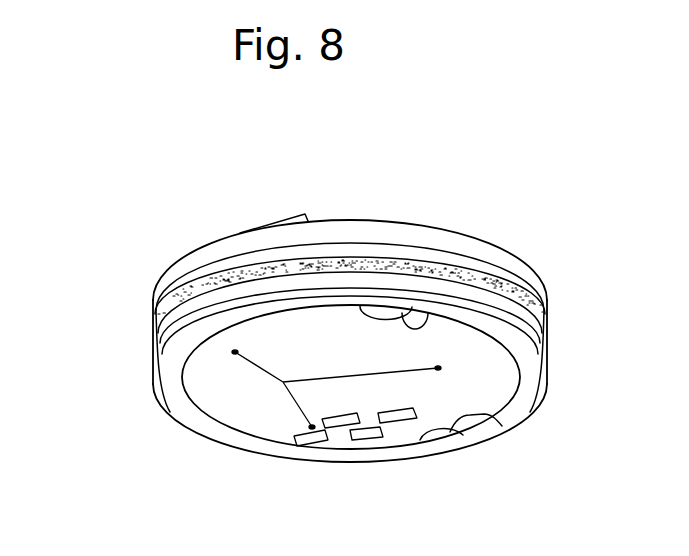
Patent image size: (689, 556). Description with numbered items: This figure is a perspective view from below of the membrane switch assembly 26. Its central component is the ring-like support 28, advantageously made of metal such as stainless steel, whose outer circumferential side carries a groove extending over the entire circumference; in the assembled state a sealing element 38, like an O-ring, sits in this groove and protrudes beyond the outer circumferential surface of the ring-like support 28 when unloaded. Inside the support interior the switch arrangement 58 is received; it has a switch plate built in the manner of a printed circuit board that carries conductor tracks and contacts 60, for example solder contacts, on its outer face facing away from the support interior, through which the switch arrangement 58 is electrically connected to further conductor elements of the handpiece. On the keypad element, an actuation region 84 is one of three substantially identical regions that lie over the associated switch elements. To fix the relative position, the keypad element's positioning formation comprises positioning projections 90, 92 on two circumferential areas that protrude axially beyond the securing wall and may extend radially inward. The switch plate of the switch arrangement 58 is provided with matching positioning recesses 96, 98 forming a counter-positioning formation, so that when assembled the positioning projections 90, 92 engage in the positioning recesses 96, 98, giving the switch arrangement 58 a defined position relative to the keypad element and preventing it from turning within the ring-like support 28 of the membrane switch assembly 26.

The membrane switch assembly 26 is at (525, 149).
The ring-like support 28 is at (515, 258).
The sealing element 38 is at (152, 333).
The switch arrangement 58 is at (502, 383).
The contacts 60 is at (372, 437).
The actuation region 84 is at (291, 215).
The positioning projection 90 is at (440, 438).
The positioning projection 92 is at (387, 313).
The positioning recess 96 is at (497, 419).
The positioning recess 98 is at (423, 317).